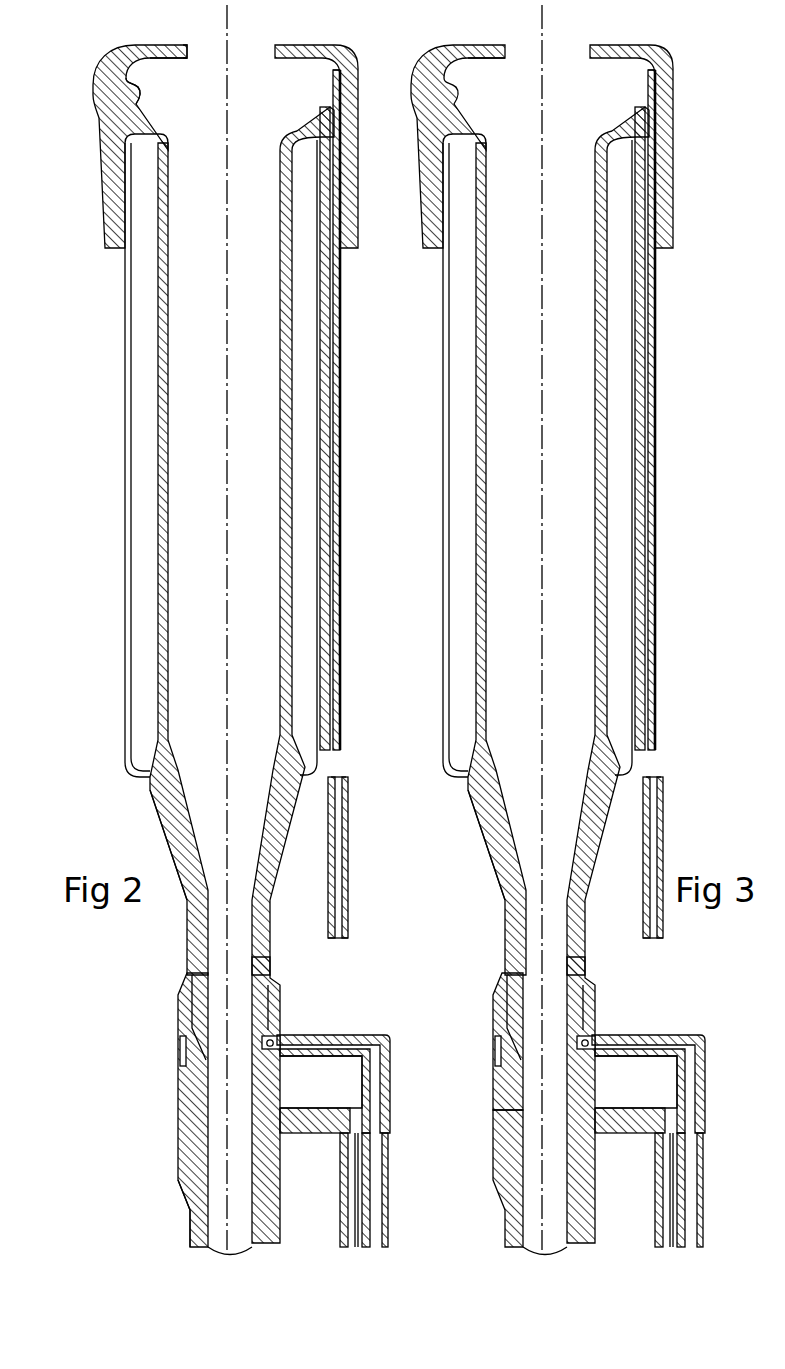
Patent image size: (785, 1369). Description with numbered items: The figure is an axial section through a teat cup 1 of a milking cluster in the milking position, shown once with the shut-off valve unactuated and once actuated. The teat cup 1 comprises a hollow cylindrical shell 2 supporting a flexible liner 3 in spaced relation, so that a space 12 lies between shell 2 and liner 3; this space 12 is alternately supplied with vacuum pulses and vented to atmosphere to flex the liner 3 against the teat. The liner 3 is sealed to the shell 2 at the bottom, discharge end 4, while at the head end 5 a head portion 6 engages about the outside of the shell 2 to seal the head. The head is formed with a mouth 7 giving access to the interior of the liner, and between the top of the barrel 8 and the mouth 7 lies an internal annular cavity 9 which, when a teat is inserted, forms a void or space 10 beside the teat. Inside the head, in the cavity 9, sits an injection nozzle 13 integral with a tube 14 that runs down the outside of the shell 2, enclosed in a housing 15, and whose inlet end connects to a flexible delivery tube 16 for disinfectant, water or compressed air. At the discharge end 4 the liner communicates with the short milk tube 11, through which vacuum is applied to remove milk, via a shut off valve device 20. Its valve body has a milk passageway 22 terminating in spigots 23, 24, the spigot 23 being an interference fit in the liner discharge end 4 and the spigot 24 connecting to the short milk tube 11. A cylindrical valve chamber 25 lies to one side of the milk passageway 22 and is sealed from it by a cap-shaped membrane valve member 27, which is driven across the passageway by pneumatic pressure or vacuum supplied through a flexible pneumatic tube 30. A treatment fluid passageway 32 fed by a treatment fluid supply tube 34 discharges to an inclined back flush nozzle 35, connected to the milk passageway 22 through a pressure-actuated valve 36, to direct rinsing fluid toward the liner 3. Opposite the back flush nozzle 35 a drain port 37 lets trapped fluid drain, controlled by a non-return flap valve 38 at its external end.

In FIG. 2, the teat cup 1 is at (116, 488).
In FIG. 3, the teat cup 1 is at (455, 510).
In FIG. 2, the shell 2 is at (124, 343).
In FIG. 3, the shell 2 is at (419, 460).
In FIG. 2, the liner 3 is at (157, 412).
In FIG. 3, the liner 3 is at (448, 559).
In FIG. 2, the discharge end 4 is at (148, 810).
In FIG. 3, the discharge end 4 is at (503, 845).
In FIG. 2, the head end 5 is at (357, 51).
In FIG. 2, the head portion 6 is at (108, 71).
In FIG. 2, the mouth 7 is at (185, 45).
In FIG. 3, the mouth 7 is at (649, 129).
In FIG. 2, the barrel 8 is at (281, 314).
In FIG. 3, the barrel 8 is at (600, 541).
In FIG. 2, the internal annular cavity 9 is at (130, 104).
In FIG. 2, the void or space 10 is at (176, 103).
In FIG. 3, the void or space 10 is at (483, 75).
In FIG. 2, the short milk tube 11 is at (190, 1207).
In FIG. 2, the space 12 is at (305, 556).
In FIG. 3, the space 12 is at (659, 441).
In FIG. 2, the injection nozzle 13 is at (337, 74).
In FIG. 3, the injection nozzle 13 is at (606, 100).
In FIG. 2, the tube 14 is at (336, 763).
In FIG. 3, the tube 14 is at (675, 764).
In FIG. 2, the housing 15 is at (343, 624).
In FIG. 2, the flexible delivery tube 16 is at (333, 849).
In FIG. 3, the flexible delivery tube 16 is at (673, 857).
In FIG. 2, the shut off valve device 20 is at (155, 1100).
In FIG. 3, the shut off valve device 20 is at (588, 1102).
In FIG. 2, the milk passageway 22 is at (218, 1010).
In FIG. 3, the milk passageway 22 is at (543, 627).
In FIG. 3, the spigot 23 is at (477, 1030).
In FIG. 3, the spigot 24 is at (478, 1178).
In FIG. 3, the cylindrical valve chamber 25 is at (669, 1079).
In FIG. 2, the valve member 27 is at (315, 1066).
In FIG. 3, the valve member 27 is at (617, 1082).
In FIG. 2, the flexible pneumatic tube 30 is at (352, 1217).
In FIG. 2, the treatment fluid passageway 32 is at (374, 1080).
In FIG. 3, the treatment fluid passageway 32 is at (667, 1084).
In FIG. 2, the treatment fluid supply tube 34 is at (375, 1189).
In FIG. 2, the back flush nozzle 35 is at (256, 1040).
In FIG. 2, the pressure-actuated valve 36 is at (272, 1042).
In FIG. 3, the pressure-actuated valve 36 is at (660, 998).
In FIG. 2, the drain port 37 is at (183, 1058).
In FIG. 3, the non-return flap valve 38 is at (469, 1053).